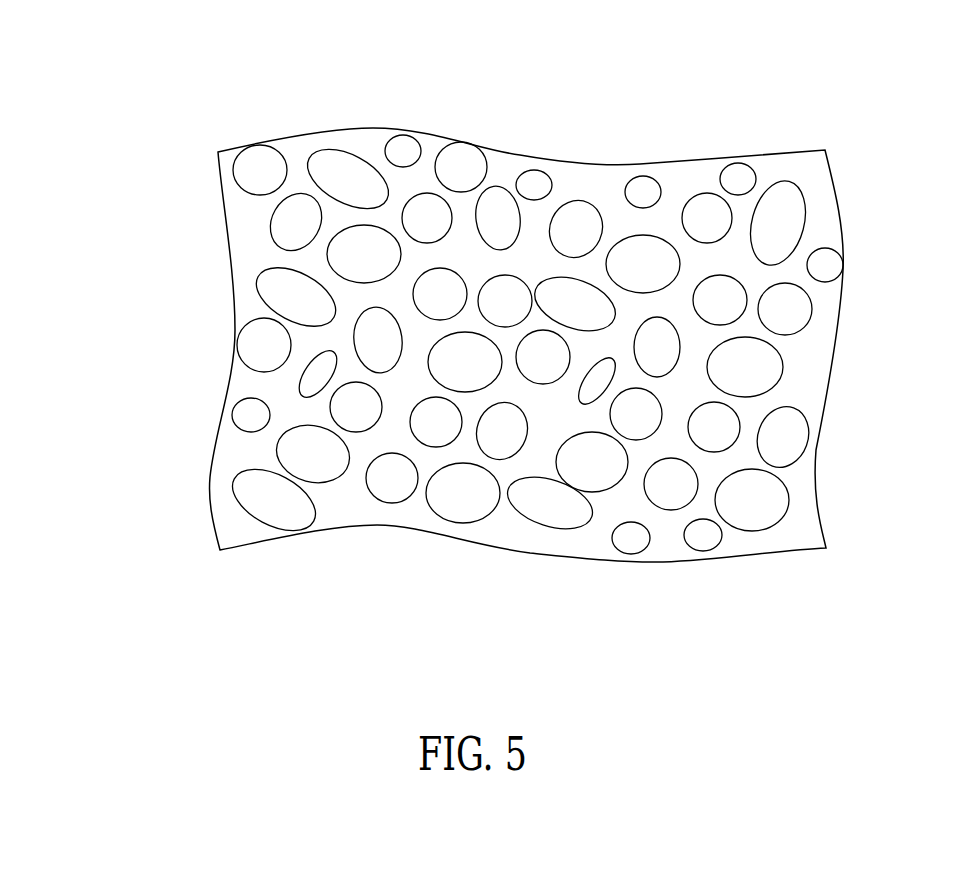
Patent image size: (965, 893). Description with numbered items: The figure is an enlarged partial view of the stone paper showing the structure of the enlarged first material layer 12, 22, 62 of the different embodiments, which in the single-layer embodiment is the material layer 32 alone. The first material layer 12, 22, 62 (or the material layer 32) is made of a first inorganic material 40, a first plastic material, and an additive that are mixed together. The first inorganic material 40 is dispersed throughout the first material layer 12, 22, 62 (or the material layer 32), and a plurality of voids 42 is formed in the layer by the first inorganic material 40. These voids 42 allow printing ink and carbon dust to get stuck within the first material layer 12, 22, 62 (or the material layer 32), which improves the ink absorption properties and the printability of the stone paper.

The first material layer 12 is at (110, 152).
The first material layer 22 is at (160, 61).
The material layer 32 is at (237, 61).
The first material layer 62 is at (526, 300).
The first inorganic material 40 is at (793, 208).
The voids 42 is at (722, 248).